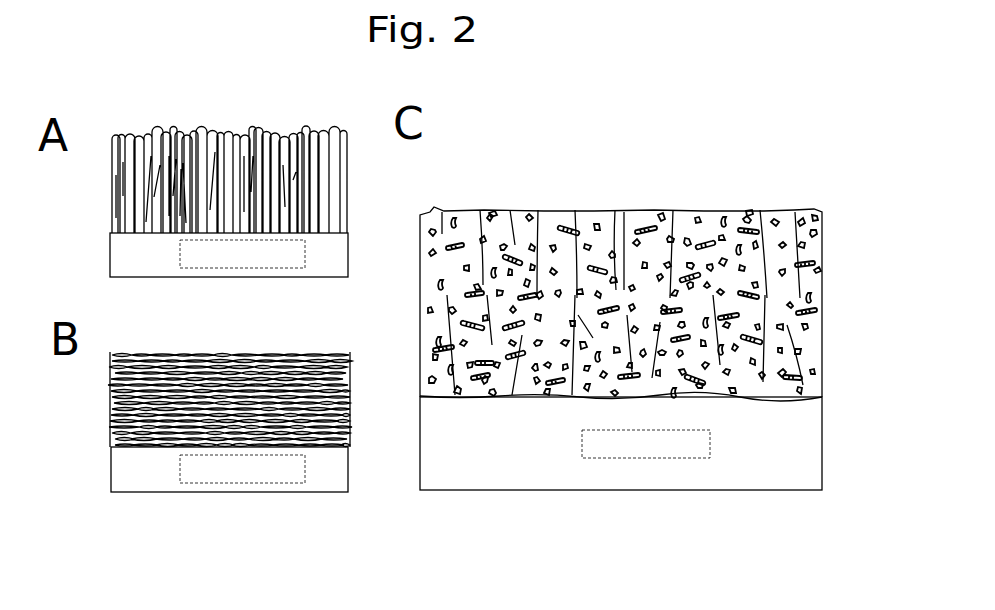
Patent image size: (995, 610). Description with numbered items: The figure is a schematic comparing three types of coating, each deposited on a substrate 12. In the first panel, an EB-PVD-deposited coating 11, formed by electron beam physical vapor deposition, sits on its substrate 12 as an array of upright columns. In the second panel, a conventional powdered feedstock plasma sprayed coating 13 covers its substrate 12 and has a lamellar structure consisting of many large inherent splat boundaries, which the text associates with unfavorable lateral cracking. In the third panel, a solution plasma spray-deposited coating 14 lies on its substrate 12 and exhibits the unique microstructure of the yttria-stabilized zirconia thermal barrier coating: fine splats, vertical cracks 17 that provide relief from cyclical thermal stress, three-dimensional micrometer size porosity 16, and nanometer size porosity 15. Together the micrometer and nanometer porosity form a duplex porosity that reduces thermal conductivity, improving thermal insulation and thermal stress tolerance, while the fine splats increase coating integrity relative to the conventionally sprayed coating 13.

The EB-PVD-deposited coating 11 is at (197, 97).
The substrate 12 is at (197, 298).
The conventional powdered feedstock plasma sprayed coating 13 is at (264, 333).
The solution plasma spray-deposited coating 14 is at (855, 345).
The nanometer size porosity 15 is at (491, 212).
The three-dimensional micrometer size porosity 16 is at (615, 209).
The vertical cracks 17 is at (747, 209).